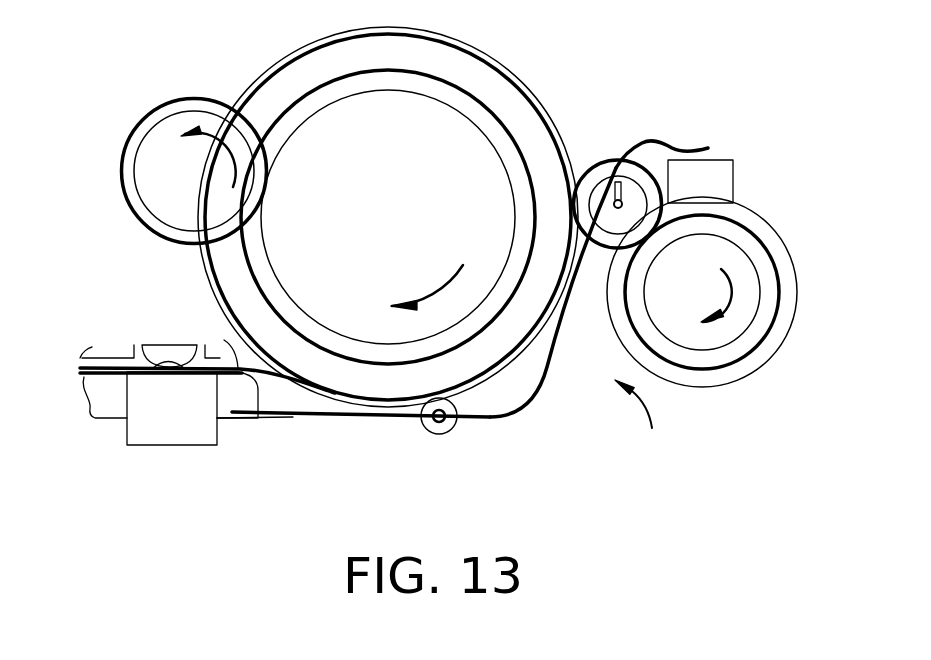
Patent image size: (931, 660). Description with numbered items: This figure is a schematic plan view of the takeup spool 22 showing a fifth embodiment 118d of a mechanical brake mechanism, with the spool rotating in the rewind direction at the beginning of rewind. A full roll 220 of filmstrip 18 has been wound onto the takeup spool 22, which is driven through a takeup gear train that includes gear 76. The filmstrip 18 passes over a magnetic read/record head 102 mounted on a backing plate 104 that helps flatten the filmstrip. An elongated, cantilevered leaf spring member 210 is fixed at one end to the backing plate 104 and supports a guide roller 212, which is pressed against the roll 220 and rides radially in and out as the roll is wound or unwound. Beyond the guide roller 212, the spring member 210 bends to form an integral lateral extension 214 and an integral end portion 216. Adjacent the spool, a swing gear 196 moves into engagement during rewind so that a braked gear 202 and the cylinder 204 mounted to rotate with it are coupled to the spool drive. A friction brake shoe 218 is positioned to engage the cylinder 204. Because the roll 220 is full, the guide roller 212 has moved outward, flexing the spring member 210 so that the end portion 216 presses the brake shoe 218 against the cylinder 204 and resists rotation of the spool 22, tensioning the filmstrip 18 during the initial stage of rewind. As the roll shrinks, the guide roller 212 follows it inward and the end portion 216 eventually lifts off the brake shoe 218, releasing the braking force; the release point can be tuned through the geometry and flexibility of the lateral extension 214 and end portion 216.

The filmstrip 18 is at (226, 343).
The takeup spool 22 is at (333, 127).
The gear 76 is at (197, 98).
The magnetic read/record head 102 is at (170, 446).
The backing plate 104 is at (118, 425).
The fifth embodiment of a mechanical brake mechanism 118d is at (667, 418).
The swing gear 196 is at (606, 158).
The braked gear 202 is at (770, 245).
The cylinder 204 is at (767, 360).
The leaf spring member 210 is at (293, 417).
The guide roller 212 is at (442, 434).
The lateral extension 214 is at (540, 378).
The end portion 216 is at (678, 147).
The friction brake shoe 218 is at (733, 180).
The full roll of filmstrip 220 is at (471, 70).